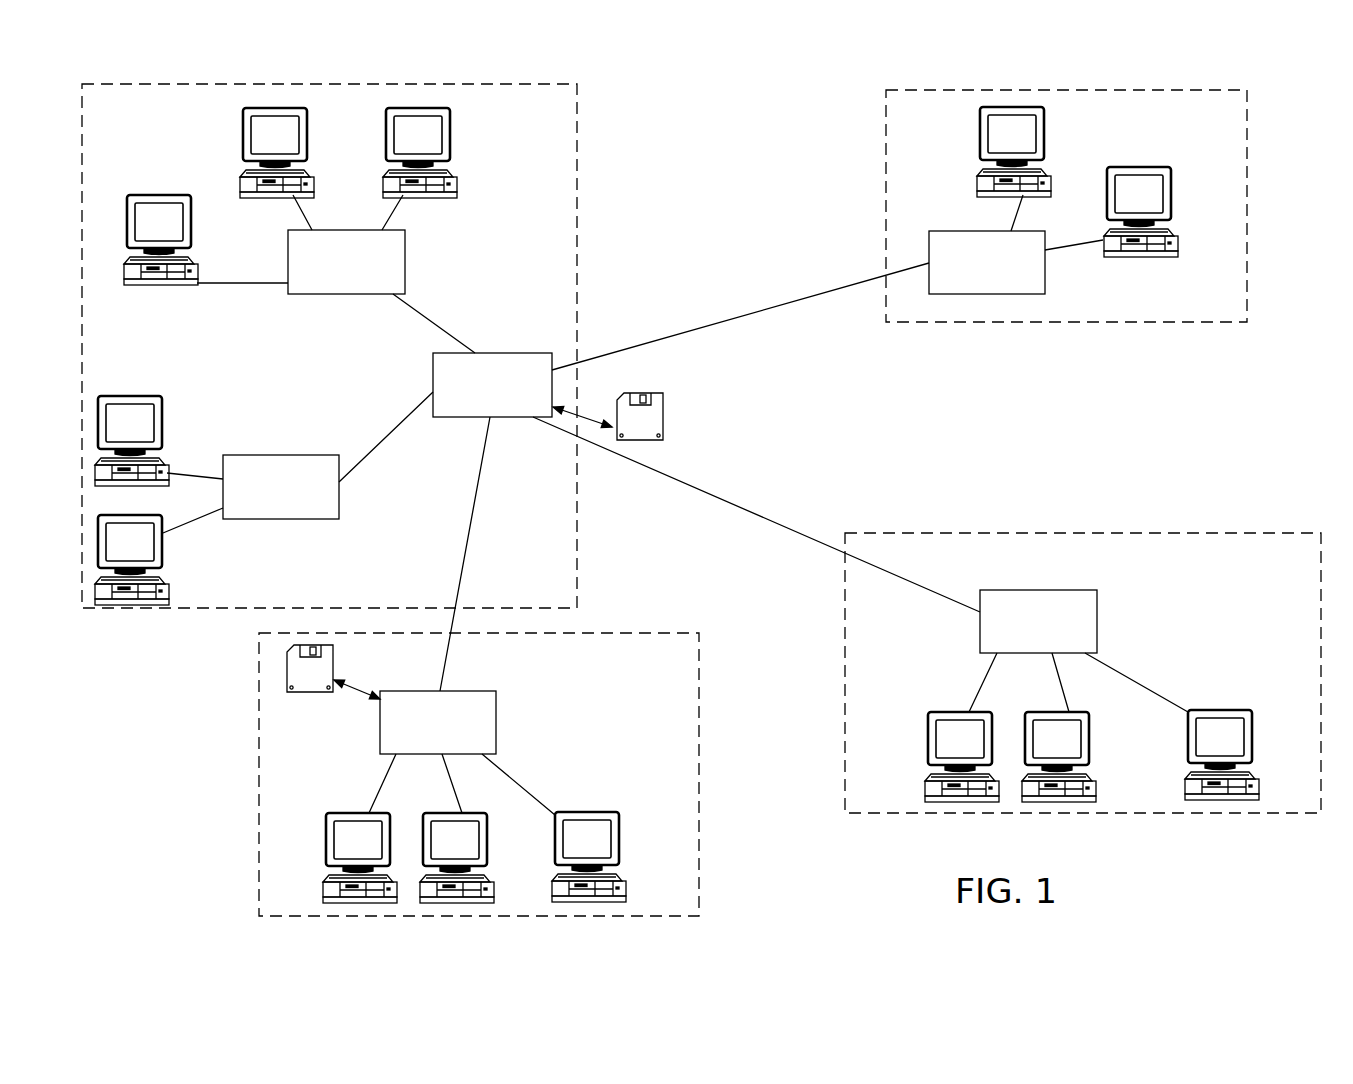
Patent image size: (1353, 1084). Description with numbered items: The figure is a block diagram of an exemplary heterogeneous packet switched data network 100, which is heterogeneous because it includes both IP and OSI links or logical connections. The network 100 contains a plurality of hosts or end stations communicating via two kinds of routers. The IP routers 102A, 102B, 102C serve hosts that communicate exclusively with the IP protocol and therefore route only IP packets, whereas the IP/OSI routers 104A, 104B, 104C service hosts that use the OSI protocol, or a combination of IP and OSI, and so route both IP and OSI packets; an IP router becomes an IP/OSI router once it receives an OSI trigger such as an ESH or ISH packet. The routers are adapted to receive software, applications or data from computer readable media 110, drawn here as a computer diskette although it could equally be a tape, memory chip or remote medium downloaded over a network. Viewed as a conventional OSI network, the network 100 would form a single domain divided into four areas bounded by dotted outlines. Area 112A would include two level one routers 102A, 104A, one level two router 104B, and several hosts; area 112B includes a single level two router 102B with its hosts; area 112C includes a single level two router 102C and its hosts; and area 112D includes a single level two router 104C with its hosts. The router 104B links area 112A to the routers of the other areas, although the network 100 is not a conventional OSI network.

The heterogeneous packet switched data network 100 is at (607, 137).
The IP router 102A is at (370, 275).
The IP router 102B is at (462, 736).
The IP router 102C is at (1062, 635).
The IP/OSI router 104A is at (305, 500).
The IP/OSI router 104B is at (516, 398).
The IP/OSI router 104C is at (1010, 276).
The computer readable media 110 is at (663, 418).
The area 112A is at (577, 210).
The area 112B is at (698, 710).
The area 112C is at (1167, 532).
The area 112D is at (1206, 322).